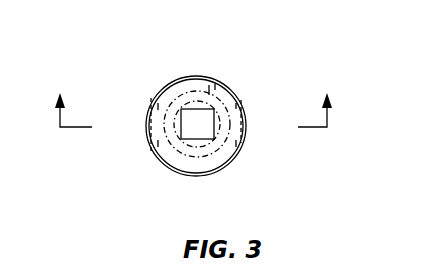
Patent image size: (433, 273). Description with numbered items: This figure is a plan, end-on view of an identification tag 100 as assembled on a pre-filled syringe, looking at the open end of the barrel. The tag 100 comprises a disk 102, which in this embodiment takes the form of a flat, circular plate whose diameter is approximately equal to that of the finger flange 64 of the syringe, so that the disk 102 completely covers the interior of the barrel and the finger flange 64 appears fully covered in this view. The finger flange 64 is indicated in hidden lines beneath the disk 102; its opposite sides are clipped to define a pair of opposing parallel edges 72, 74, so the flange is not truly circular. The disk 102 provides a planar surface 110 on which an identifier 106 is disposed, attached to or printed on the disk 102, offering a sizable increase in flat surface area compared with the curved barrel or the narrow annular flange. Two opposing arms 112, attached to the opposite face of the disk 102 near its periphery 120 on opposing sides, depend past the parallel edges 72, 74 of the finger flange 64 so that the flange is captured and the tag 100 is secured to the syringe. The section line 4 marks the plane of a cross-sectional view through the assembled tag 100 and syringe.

The section line 4- 4 is at (192, 110).
The finger flange 64 is at (176, 78).
The opposing parallel edge 72 is at (150, 131).
The opposing parallel edge 74 is at (247, 140).
The identification tag 100 is at (244, 92).
The disk 102 is at (186, 160).
The identifier 106 is at (197, 130).
The surface 110 is at (201, 82).
The opposing arms 112 is at (147, 110).
The periphery 120 is at (156, 158).